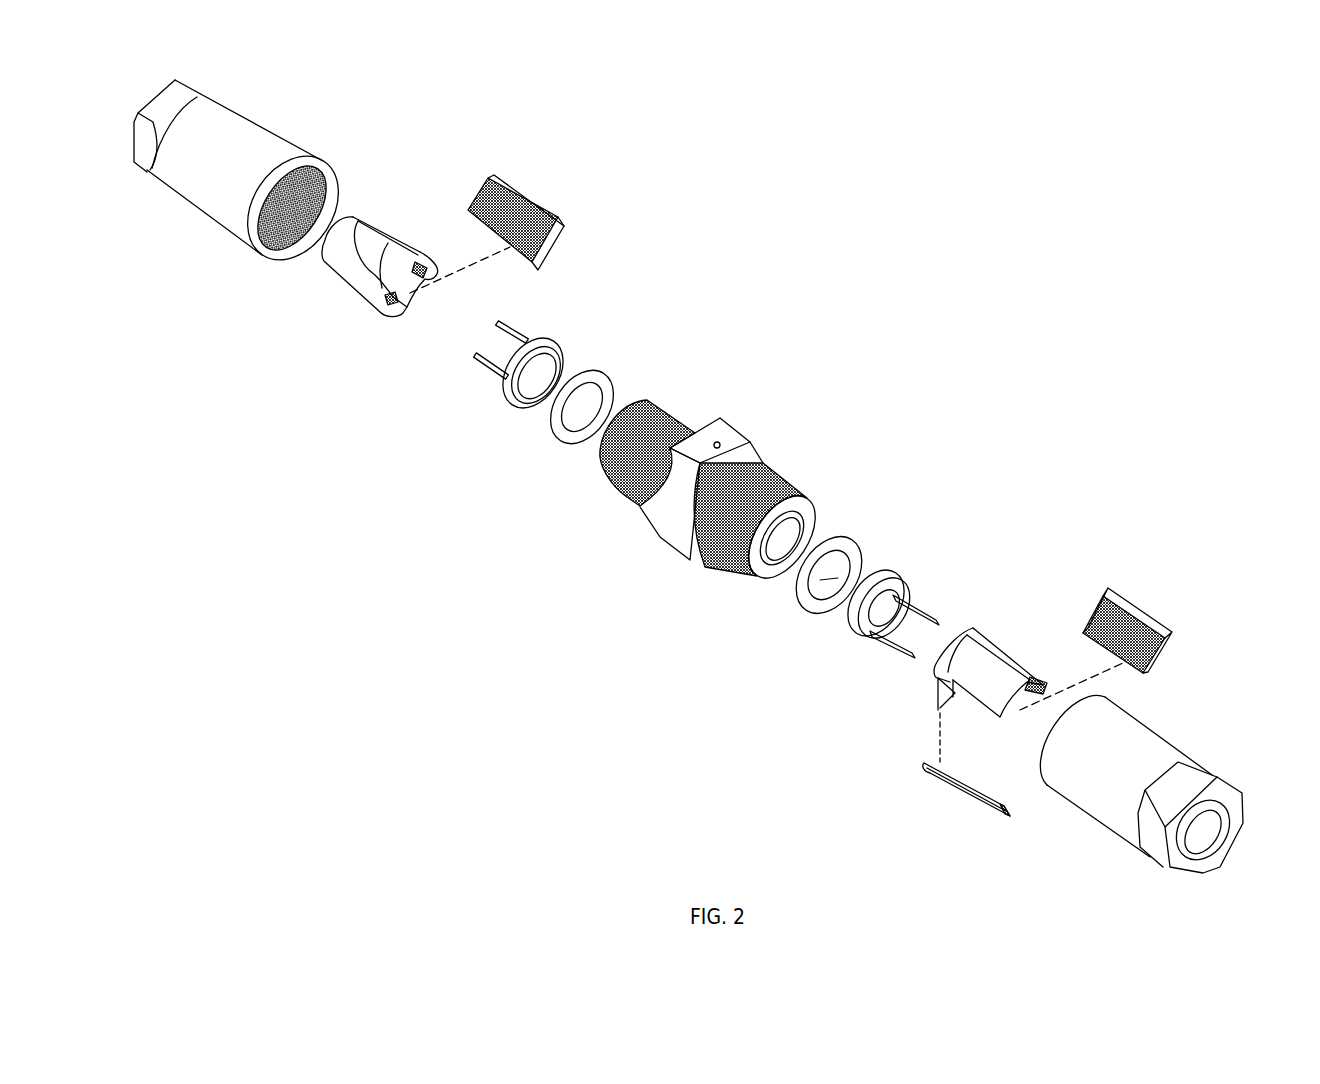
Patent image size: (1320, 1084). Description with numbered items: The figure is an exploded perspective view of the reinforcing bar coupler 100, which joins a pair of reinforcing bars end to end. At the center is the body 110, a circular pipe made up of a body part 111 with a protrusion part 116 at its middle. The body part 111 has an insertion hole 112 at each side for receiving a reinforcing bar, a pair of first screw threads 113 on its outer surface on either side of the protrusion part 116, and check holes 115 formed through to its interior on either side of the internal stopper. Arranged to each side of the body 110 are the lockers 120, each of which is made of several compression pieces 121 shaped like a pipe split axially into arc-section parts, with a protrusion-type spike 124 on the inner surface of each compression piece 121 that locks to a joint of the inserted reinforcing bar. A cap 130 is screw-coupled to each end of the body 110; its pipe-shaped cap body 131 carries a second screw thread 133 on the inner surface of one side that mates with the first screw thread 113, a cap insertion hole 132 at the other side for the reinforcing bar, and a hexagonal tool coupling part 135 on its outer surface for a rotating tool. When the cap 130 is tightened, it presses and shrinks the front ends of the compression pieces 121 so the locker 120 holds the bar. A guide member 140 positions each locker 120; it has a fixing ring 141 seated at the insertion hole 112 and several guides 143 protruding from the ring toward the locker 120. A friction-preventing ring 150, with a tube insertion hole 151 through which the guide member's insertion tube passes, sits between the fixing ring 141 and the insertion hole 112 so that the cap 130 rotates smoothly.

The reinforcing bar coupler 100 is at (890, 297).
The body 110 is at (657, 558).
The body part 111 is at (610, 490).
The insertion hole 112 is at (793, 516).
The first screw thread 113 is at (773, 477).
The check hole 115 is at (718, 441).
The protrusion part 116 is at (747, 443).
The locker 120 is at (1040, 593).
The compression piece 121 is at (938, 707).
The spike 124 is at (1143, 637).
The cap 130 is at (1200, 720).
The cap body 131 is at (1155, 727).
The cap insertion hole 132 is at (1207, 833).
The second screw thread 133 is at (333, 188).
The tool coupling part 135 is at (1210, 773).
The guide member 140 is at (488, 398).
The fixing ring 141 is at (558, 342).
The guide 143 is at (523, 333).
The friction-preventing ring 150 is at (857, 537).
The tube insertion hole 151 is at (873, 573).